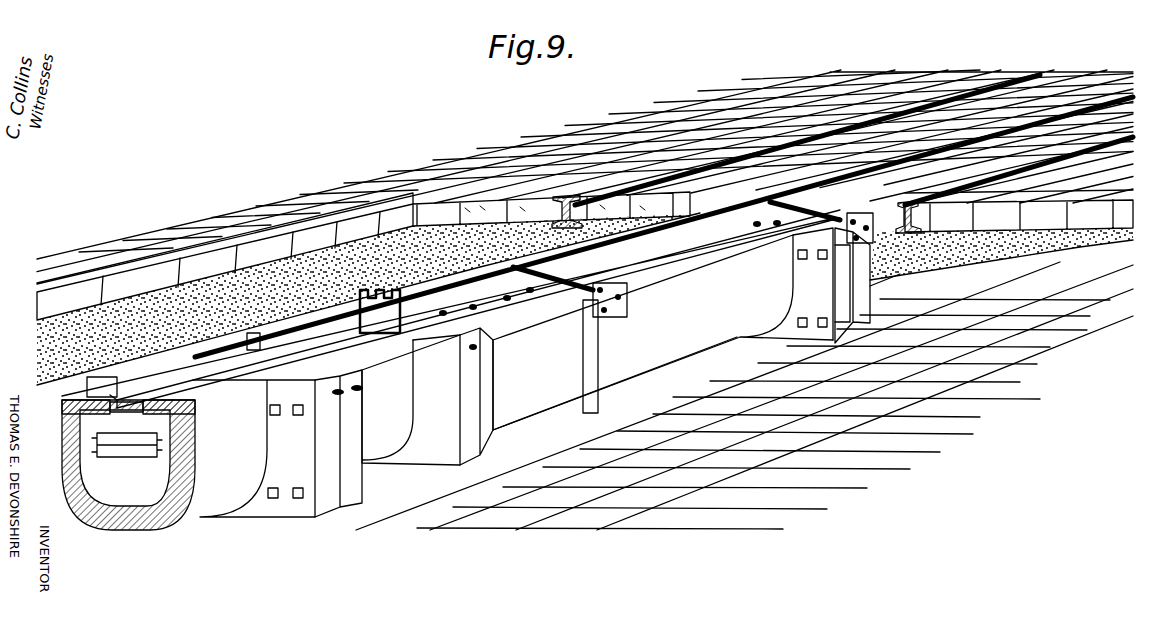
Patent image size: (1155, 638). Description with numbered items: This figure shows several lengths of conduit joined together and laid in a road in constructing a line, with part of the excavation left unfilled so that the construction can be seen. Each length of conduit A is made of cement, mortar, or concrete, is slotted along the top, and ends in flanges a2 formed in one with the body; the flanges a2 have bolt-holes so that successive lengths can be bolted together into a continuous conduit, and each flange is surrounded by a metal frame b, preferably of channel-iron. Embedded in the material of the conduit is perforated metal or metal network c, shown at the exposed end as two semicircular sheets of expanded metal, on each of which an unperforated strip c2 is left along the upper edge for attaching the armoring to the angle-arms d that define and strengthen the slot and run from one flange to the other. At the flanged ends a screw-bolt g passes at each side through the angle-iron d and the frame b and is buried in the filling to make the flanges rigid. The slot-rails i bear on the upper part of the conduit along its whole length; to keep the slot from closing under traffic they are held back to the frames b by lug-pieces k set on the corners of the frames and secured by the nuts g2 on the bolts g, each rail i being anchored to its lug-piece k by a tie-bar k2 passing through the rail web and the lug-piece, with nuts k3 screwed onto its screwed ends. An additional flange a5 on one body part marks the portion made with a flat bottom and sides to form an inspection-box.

The conduit length A is at (513, 376).
The flange a2 is at (318, 452).
The additional flange a5 is at (436, 371).
The metal frame b is at (150, 357).
The perforated metal or metal network c is at (77, 477).
The unperforated strip c2 is at (193, 417).
The angle-arms d is at (62, 406).
The screw-bolt g is at (355, 393).
The nuts g2 is at (711, 294).
The slot-rails i is at (664, 227).
The lug-pieces k is at (716, 329).
The tie-bars k2 is at (580, 278).
The nuts k3 is at (630, 295).